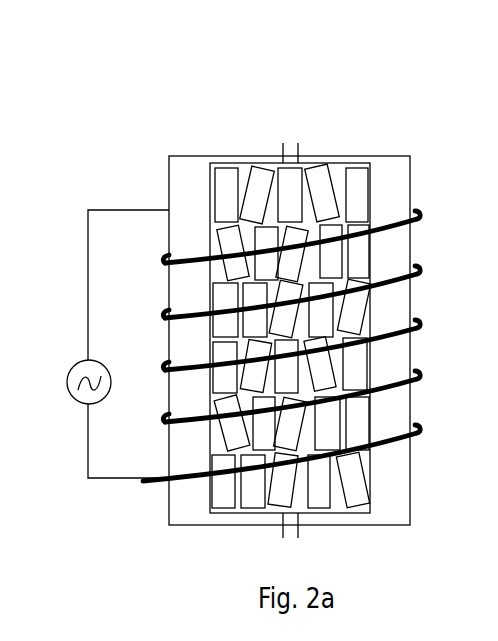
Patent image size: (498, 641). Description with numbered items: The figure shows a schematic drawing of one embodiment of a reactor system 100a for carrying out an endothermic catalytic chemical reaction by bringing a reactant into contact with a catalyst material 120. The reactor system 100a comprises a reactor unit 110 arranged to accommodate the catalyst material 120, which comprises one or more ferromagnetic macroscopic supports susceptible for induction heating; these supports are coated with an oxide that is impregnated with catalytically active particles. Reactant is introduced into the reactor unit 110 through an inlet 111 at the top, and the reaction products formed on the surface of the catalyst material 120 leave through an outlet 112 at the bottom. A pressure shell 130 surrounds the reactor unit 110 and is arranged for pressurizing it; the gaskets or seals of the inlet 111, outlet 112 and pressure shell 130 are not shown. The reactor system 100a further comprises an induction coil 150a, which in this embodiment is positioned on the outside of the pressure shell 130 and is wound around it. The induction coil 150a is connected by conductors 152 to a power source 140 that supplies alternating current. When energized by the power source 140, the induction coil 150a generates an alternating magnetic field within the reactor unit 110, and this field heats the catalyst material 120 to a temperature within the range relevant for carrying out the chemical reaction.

The reactor system 100a is at (247, 284).
The reactor unit 110 is at (370, 475).
The inlet 111 is at (270, 142).
The outlet 112 is at (268, 541).
The catalyst material 120 is at (360, 235).
The pressure shell 130 is at (375, 525).
The power source 140 is at (70, 371).
The induction coil 150a is at (205, 263).
The conductors 152 is at (87, 267).